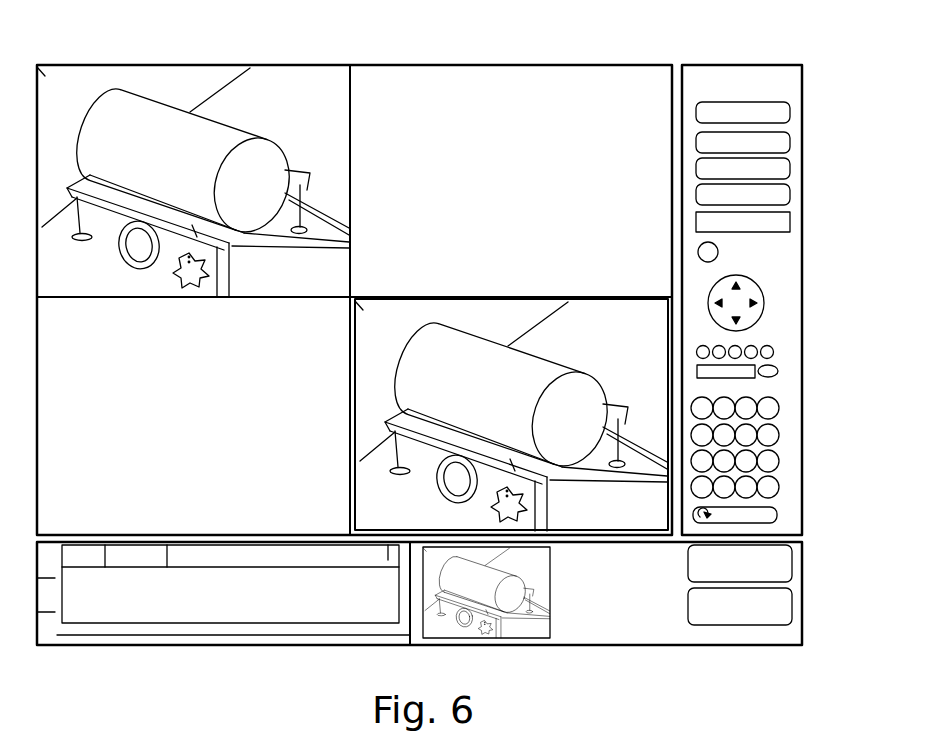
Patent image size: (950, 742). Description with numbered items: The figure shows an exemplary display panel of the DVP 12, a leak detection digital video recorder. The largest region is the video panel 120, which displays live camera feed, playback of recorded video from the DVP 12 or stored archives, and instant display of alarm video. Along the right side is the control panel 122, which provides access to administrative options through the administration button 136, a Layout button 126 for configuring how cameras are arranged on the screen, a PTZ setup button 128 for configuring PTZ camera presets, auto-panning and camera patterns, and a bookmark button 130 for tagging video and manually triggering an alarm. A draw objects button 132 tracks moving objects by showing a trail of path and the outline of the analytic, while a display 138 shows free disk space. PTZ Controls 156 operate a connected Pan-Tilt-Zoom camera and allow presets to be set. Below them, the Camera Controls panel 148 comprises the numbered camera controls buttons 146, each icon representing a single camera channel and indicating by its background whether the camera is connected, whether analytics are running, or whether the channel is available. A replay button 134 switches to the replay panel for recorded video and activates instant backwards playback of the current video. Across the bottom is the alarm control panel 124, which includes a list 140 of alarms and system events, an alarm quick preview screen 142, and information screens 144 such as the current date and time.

The DVP 12 is at (188, 54).
The video panel 120 is at (406, 58).
The control panel 122 is at (747, 58).
The alarm control panel 124 is at (90, 655).
The Layout button 126 is at (790, 146).
The PTZ setup button 128 is at (790, 173).
The bookmark button 130 is at (825, 194).
The draw objects button 132 is at (790, 222).
The replay button 134 is at (777, 515).
The administration button 136 is at (790, 110).
The display 138 is at (718, 252).
The list 140 is at (170, 625).
The alarm quick preview screen 142 is at (518, 640).
The information screens 144 is at (792, 560).
The camera controls buttons 146 is at (793, 337).
The Camera Controls panel 148 is at (786, 400).
The PTZ Controls 156 is at (786, 277).